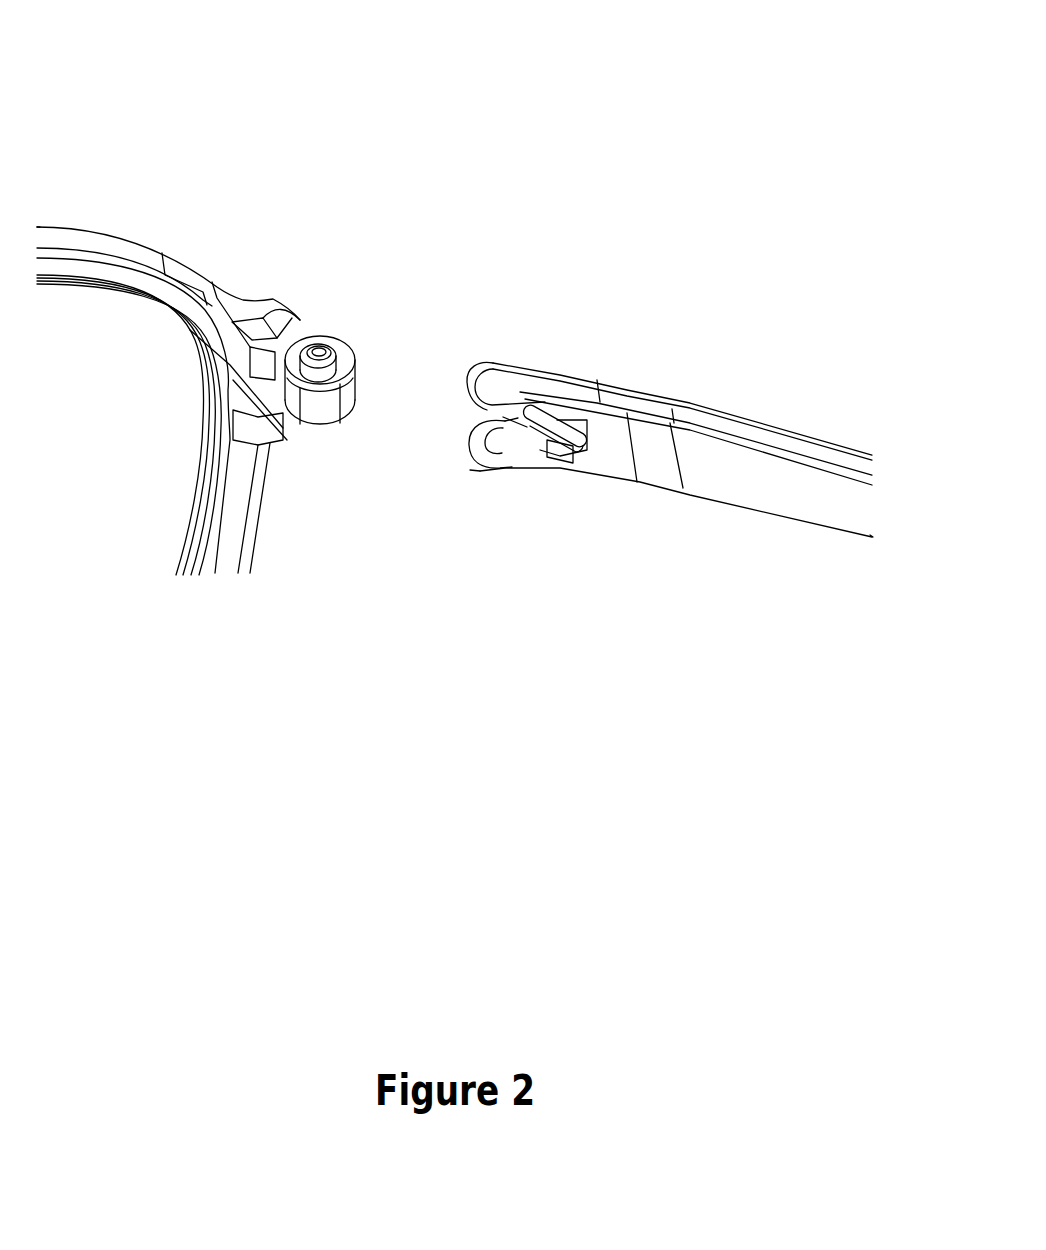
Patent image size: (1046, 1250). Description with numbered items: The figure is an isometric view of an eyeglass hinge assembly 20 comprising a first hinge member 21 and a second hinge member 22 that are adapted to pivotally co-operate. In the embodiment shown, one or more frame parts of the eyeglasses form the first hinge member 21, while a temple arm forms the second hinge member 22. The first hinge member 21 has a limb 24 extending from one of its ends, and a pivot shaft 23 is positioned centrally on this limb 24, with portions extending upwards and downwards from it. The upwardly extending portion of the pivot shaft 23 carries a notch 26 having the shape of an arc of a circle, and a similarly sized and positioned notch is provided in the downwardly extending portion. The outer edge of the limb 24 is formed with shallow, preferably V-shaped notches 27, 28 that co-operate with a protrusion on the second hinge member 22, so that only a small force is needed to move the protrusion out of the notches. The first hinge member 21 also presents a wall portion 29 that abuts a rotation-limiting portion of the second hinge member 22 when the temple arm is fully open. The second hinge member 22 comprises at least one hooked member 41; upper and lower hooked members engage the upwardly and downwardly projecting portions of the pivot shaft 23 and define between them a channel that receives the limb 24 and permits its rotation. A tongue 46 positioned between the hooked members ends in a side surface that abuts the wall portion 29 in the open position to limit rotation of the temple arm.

The eyeglass hinge assembly 20 is at (227, 75).
The first hinge member 21 is at (106, 178).
The second hinge member 22 is at (754, 316).
The pivot shaft 23 is at (328, 340).
The limb 24 is at (297, 446).
The notch 26 is at (299, 333).
The notch 27 is at (340, 409).
The notch 28 is at (352, 349).
The wall portion 29 is at (320, 318).
The hooked member 41 is at (495, 474).
The tongue 46 is at (555, 417).